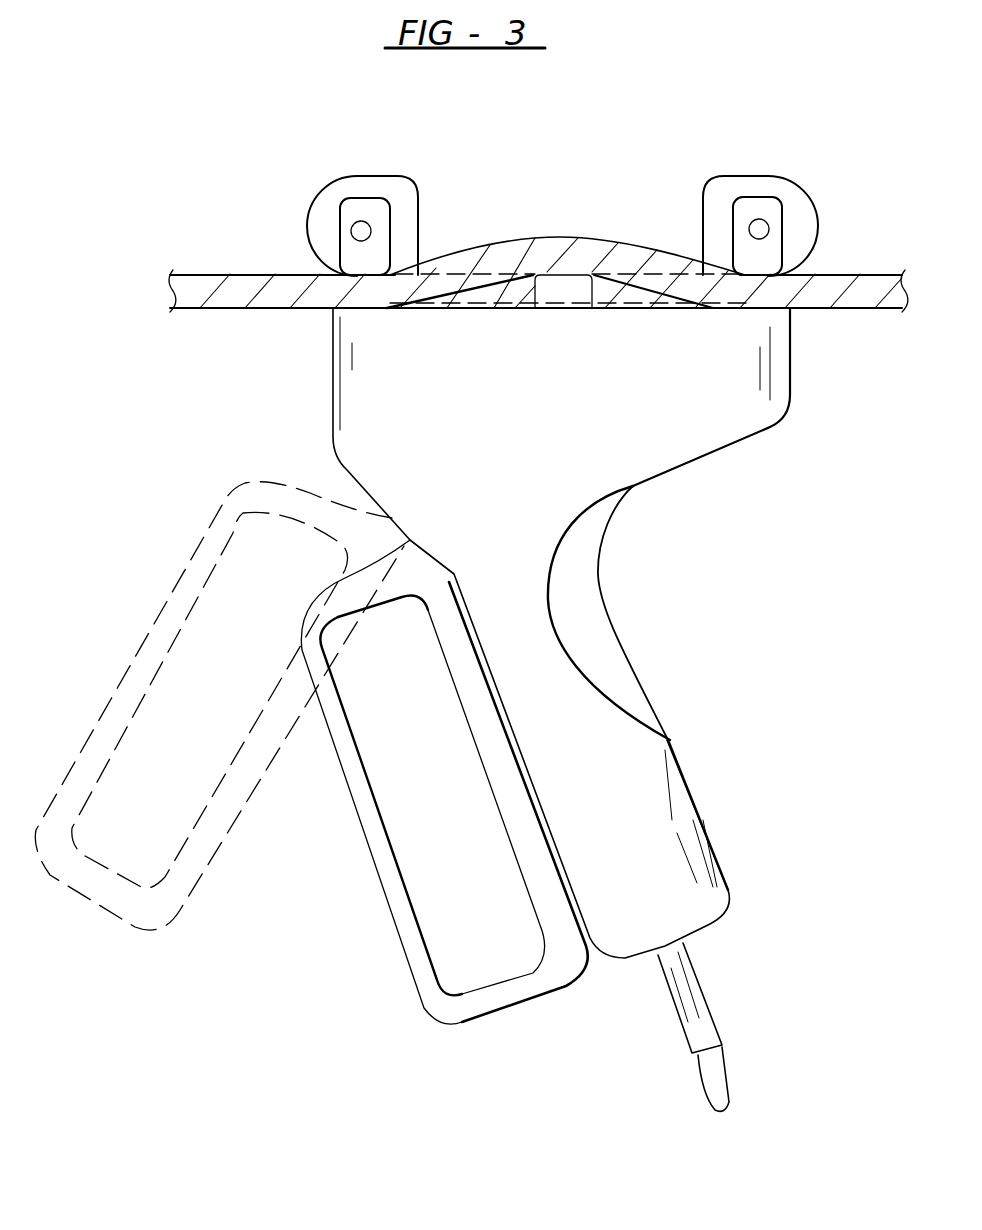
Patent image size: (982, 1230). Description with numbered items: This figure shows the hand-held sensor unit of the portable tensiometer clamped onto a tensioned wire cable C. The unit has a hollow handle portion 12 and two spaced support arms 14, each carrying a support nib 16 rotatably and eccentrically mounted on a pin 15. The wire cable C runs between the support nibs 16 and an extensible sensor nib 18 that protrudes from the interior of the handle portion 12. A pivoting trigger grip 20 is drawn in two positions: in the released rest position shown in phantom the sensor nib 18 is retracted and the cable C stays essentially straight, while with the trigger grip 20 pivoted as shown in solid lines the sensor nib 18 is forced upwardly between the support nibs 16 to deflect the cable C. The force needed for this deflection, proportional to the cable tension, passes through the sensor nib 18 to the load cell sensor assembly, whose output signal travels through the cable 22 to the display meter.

The handle portion 12 is at (602, 633).
The support arms 14 is at (320, 247).
The pins 15 is at (353, 232).
The support nibs 16 is at (363, 207).
The sensor nib 18 is at (560, 282).
The trigger grip 20 is at (373, 847).
The cable 22 is at (700, 1017).
The wire cable C is at (473, 257).